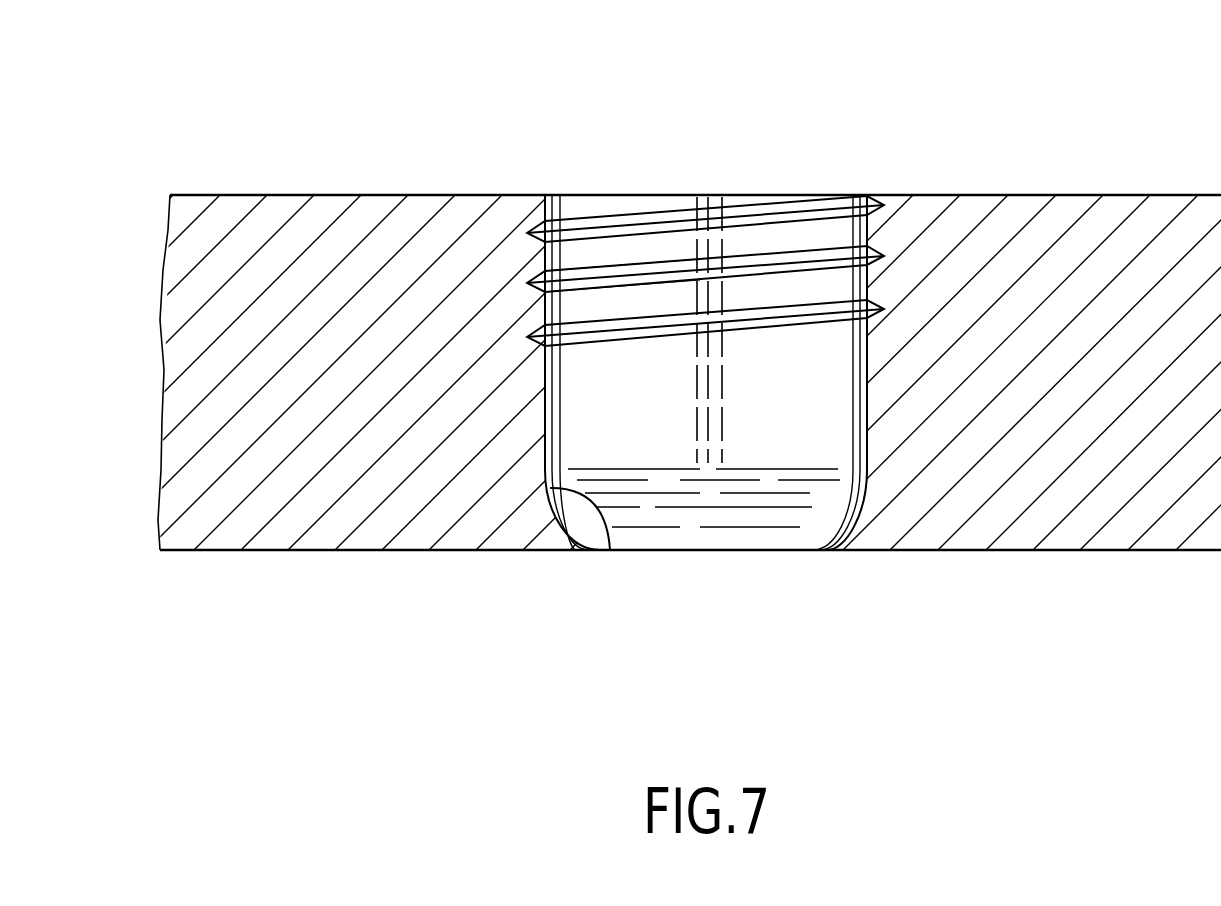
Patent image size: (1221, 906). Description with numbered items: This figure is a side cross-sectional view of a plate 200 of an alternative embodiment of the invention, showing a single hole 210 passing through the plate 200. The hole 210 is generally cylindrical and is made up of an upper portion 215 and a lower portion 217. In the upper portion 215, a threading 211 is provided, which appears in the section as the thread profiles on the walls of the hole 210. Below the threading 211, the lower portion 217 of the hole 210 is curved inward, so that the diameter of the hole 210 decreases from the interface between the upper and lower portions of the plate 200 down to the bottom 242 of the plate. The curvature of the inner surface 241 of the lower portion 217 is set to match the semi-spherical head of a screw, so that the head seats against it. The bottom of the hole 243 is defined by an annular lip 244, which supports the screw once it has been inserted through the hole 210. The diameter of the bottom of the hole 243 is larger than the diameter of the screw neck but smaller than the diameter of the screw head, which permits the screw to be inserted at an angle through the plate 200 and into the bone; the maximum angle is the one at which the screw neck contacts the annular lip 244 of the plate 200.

The plate 200 is at (352, 359).
The hole 210 is at (708, 190).
The threading 211 is at (884, 309).
The upper portion 215 is at (517, 279).
The lower portion 217 is at (523, 408).
The inner surface 241 is at (610, 550).
The bottom 242 is at (975, 557).
The bottom of the hole 243 is at (687, 550).
The annular lip 244 is at (823, 550).